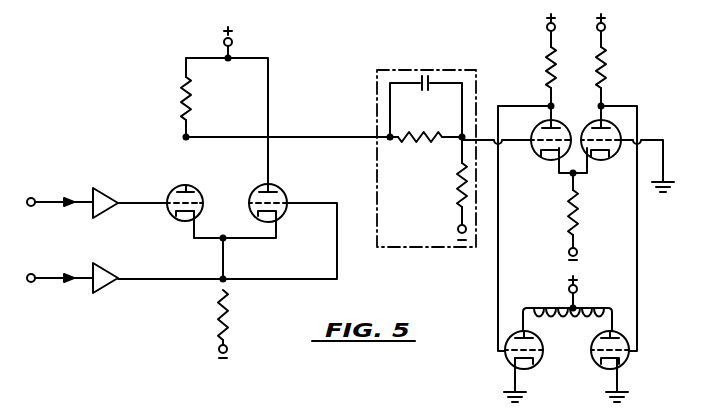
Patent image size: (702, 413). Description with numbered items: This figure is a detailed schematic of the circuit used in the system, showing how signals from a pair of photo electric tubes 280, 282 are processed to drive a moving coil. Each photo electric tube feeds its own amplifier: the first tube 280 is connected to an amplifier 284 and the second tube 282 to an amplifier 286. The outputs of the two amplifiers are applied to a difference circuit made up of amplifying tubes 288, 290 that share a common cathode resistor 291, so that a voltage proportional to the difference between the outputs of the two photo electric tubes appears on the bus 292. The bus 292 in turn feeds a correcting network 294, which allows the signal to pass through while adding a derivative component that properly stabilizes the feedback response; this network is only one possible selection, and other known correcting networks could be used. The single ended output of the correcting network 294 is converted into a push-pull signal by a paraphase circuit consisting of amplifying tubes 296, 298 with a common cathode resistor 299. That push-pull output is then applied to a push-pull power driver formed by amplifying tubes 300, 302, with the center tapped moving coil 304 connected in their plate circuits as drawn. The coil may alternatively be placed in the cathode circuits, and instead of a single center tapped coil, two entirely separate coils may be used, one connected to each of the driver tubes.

The photo electric tube 280 is at (43, 185).
The photo electric tube 282 is at (43, 268).
The amplifier 284 is at (102, 210).
The amplifier 286 is at (128, 266).
The amplifying tube 288 is at (176, 190).
The amplifying tube 290 is at (285, 193).
The common cathode resistor 291 is at (221, 317).
The bus 292 is at (344, 137).
The correcting network 294 is at (377, 104).
The amplifying tube 296 is at (548, 158).
The amplifying tube 298 is at (590, 158).
The common cathode resistor 299 is at (581, 219).
The amplifying tube 300 is at (541, 355).
The amplifying tube 302 is at (630, 357).
The center tapped moving coil 304 is at (553, 307).